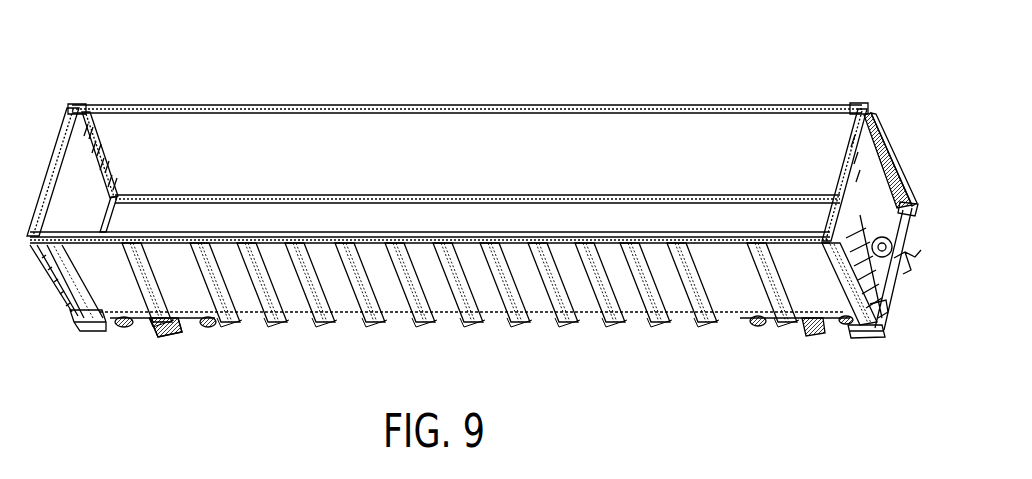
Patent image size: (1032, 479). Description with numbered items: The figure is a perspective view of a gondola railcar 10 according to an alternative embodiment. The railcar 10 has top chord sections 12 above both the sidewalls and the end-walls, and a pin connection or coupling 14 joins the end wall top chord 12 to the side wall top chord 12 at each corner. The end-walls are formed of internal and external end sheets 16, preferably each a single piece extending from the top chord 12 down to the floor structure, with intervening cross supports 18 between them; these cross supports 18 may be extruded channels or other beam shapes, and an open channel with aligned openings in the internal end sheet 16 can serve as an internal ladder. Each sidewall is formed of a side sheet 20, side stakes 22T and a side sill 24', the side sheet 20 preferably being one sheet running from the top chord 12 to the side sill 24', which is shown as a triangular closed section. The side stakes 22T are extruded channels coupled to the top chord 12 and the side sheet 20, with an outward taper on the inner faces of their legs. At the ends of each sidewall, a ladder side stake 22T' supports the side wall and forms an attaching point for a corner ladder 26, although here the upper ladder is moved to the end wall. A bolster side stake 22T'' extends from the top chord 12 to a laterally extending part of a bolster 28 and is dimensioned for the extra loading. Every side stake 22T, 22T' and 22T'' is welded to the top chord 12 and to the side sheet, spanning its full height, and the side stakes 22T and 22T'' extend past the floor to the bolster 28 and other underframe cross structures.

The railcar 10 is at (466, 81).
The top chord section 12 is at (340, 105).
The pin connection or coupling 14 is at (73, 104).
The end sheet 16 is at (84, 210).
The cross support 18 is at (874, 137).
The side sheet 20 is at (414, 159).
The side stake 22T is at (454, 329).
The ladder side stake 22T' is at (460, 322).
The bolster side stake 22T'' is at (442, 329).
The side sill 24' is at (477, 176).
The corner ladder 26 is at (880, 338).
The bolster 28 is at (166, 336).